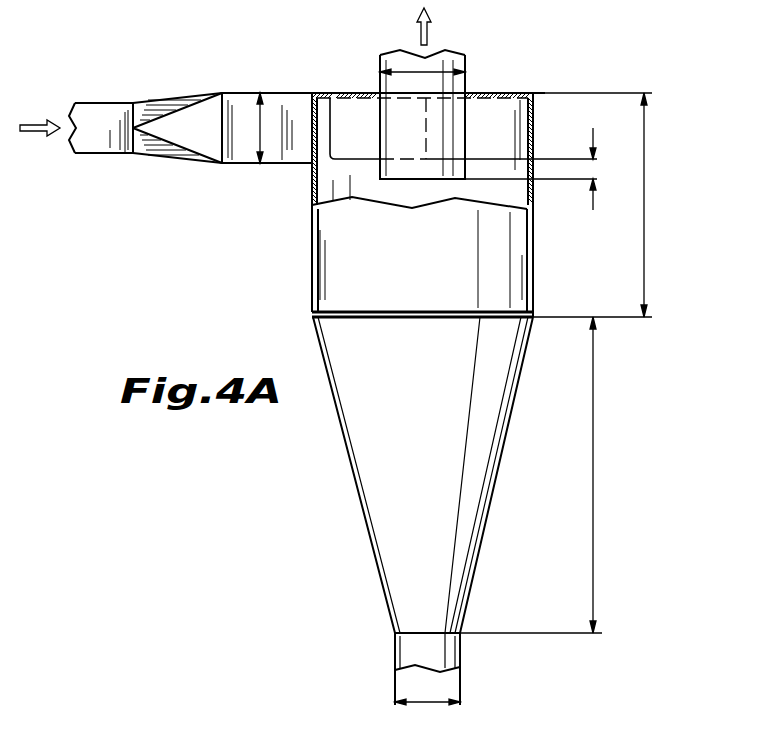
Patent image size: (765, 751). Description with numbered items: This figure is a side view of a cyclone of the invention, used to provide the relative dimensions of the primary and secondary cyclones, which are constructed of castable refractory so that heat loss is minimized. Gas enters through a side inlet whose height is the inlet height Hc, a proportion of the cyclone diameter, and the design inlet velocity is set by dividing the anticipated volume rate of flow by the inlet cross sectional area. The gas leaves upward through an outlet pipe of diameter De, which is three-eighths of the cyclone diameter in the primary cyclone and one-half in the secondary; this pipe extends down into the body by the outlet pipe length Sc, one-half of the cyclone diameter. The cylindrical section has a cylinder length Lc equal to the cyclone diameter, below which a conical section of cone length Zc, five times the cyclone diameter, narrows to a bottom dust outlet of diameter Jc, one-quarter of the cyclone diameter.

The cyclone inlet height Hc is at (262, 128).
The gas outlet diameter De is at (438, 69).
The outlet pipe length Sc is at (598, 172).
The cylinder length Lc is at (645, 215).
The cone length Zc is at (594, 470).
The dust outlet diameter Jc is at (437, 702).